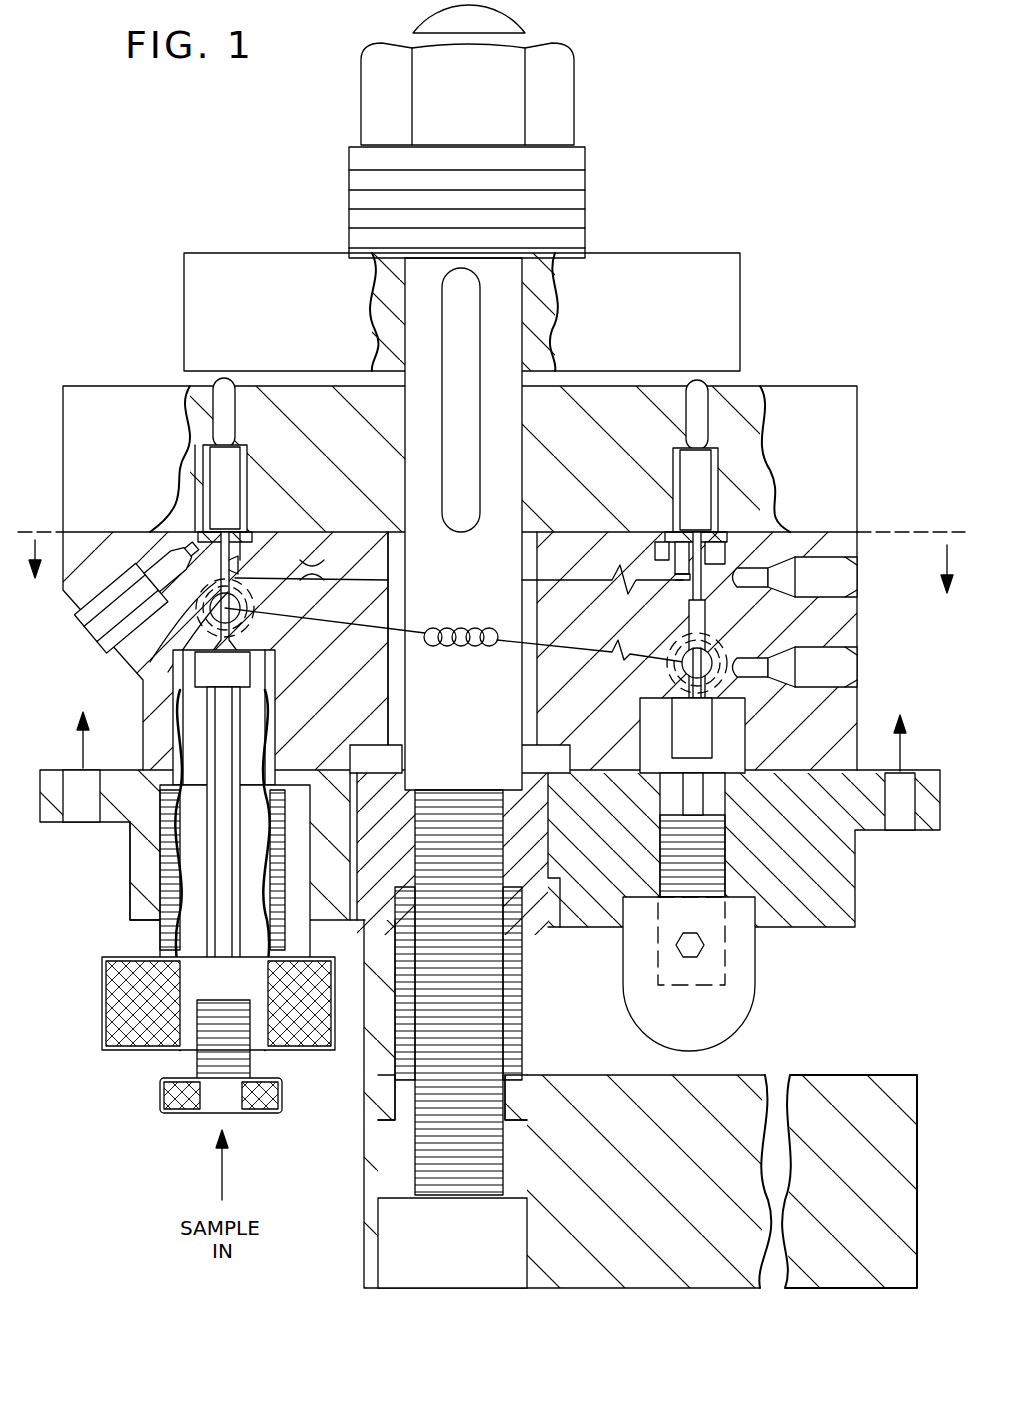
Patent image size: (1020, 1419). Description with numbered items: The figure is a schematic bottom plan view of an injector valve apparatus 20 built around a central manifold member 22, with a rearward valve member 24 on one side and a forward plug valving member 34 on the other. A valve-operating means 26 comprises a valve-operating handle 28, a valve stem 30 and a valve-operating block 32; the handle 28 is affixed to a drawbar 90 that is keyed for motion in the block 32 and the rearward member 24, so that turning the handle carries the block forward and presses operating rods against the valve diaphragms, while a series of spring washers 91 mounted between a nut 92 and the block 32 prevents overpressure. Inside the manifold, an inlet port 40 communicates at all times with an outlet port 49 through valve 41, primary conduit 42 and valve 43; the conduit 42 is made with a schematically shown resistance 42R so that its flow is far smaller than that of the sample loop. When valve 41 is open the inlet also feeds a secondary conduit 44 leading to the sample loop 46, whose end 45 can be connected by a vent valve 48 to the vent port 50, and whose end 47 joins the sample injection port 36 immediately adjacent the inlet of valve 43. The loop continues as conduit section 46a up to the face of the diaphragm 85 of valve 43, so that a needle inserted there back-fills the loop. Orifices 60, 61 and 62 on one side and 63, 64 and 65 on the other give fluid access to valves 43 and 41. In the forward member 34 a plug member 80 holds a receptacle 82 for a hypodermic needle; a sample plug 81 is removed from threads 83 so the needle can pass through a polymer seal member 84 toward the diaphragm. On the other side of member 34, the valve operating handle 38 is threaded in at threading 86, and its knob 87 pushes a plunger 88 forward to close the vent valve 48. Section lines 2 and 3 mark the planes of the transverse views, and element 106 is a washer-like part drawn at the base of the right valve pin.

The section line 2- 2 is at (491, 538).
The section line 3- 3 is at (489, 771).
The injector valve apparatus 20 is at (766, 200).
The central manifold member 22 is at (872, 710).
The rearward valve member 24 is at (820, 416).
The valve-operating means 26 is at (352, 1163).
The valve-operating handle 28 is at (565, 1262).
The valve stem 30 is at (482, 874).
The valve-operating block 32 is at (232, 292).
The forward plug valving member 34 is at (143, 848).
The injection port 36 is at (185, 542).
The valve operating handle 38 is at (623, 990).
The inlet port 40 is at (818, 580).
The valve 41 is at (693, 512).
The primary conduit 42 is at (585, 548).
The resistance 42R is at (336, 560).
The valve 43 is at (205, 505).
The secondary conduit 44 is at (704, 617).
The end of loop 45 is at (692, 655).
The sample loop 46 is at (586, 660).
The conduit section 46a is at (132, 655).
The end of loop 47 is at (297, 560).
The vent valve 48 is at (697, 733).
The outlet port 49 is at (130, 608).
The vent port 50 is at (810, 683).
The orifice 60 is at (215, 548).
The orifice 61 is at (233, 548).
The orifice 62 is at (245, 547).
The orifice 63 is at (660, 548).
The orifice 64 is at (682, 563).
The orifice 65 is at (713, 541).
The plug member 80 is at (140, 1000).
The sample plug 81 is at (180, 1118).
The receptacle 82 is at (222, 968).
The threads 83 is at (262, 1020).
The polymer seal member 84 is at (213, 672).
The diaphragm 85 is at (262, 526).
The threading 86 is at (730, 866).
The knob 87 is at (752, 1003).
The plunger 88 is at (672, 736).
The drawbar 90 is at (497, 990).
The spring washers 91 is at (585, 172).
The nut 92 is at (574, 107).
The right seal washer 106 is at (735, 540).